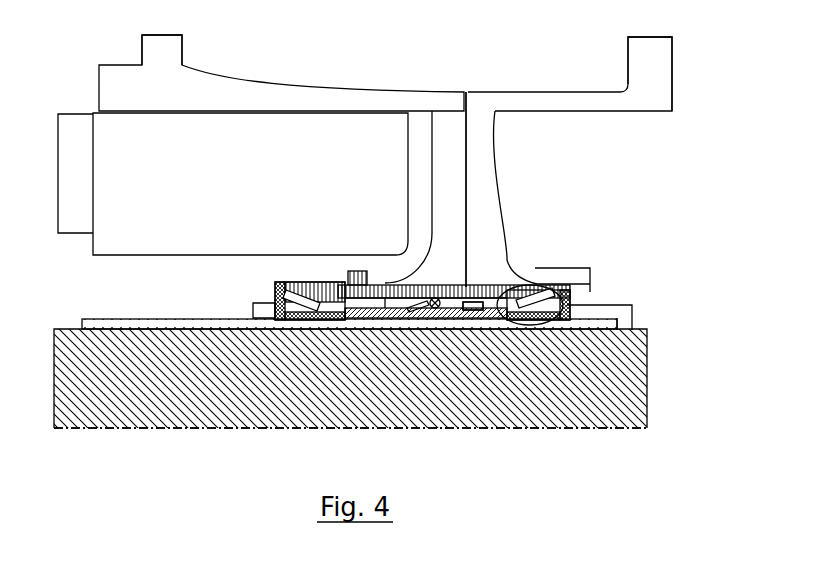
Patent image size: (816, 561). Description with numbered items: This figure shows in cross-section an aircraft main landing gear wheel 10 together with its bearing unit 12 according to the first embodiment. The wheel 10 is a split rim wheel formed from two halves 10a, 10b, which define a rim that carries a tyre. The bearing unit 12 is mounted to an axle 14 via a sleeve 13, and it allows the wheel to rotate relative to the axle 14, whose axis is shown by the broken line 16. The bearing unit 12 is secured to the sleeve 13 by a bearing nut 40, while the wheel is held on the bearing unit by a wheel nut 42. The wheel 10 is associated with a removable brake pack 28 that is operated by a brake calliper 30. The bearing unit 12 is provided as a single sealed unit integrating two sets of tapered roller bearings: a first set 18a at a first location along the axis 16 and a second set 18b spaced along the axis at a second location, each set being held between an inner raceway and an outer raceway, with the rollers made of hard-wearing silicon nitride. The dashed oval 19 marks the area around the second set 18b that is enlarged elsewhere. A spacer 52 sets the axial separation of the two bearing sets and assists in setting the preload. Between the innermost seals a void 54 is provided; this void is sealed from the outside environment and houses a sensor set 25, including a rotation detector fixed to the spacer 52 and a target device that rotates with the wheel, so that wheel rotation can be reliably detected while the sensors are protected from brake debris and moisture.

The wheel 10 is at (447, 51).
The first wheel half 10a is at (177, 93).
The second wheel half 10b is at (668, 108).
The bearing unit 12 is at (482, 262).
The sleeve 13 is at (92, 318).
The axle 14 is at (150, 405).
The axis 16 is at (602, 430).
The first set of roller bearings 18a is at (271, 288).
The second set of roller bearings 18b is at (571, 281).
The dashed oval 19 is at (572, 310).
The sensor set 25 is at (483, 310).
The brake pack 28 is at (185, 183).
The brake calliper 30 is at (67, 220).
The bearing nut 40 is at (628, 312).
The wheel nut 42 is at (556, 267).
The spacer 52 is at (386, 284).
The void 54 is at (462, 286).